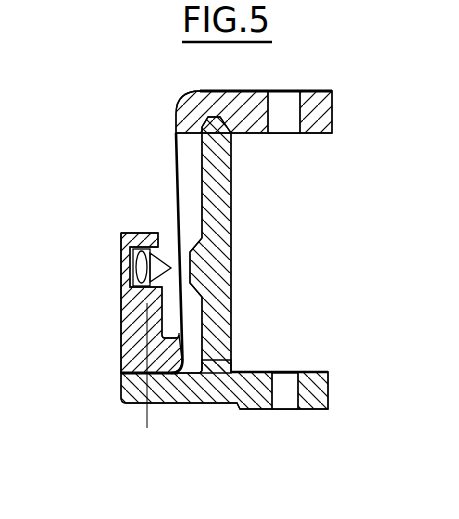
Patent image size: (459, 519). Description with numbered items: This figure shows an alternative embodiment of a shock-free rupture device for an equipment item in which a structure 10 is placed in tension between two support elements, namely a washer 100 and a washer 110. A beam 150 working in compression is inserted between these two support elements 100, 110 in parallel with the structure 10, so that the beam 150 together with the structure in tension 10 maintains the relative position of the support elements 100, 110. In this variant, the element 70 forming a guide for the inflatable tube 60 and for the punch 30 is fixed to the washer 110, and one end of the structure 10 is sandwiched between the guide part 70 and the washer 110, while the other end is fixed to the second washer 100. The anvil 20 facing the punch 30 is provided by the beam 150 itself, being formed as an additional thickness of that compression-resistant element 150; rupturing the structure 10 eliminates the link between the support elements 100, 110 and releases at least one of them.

The structure in tension 10 is at (166, 197).
The anvil 20 is at (203, 268).
The punch 30 is at (162, 261).
The inflatable tube 60 is at (133, 268).
The guide element 70 is at (128, 332).
The support element (second washer) 100 is at (318, 110).
The support element (washer) 110 is at (258, 394).
The beam working in compression 150 is at (225, 187).